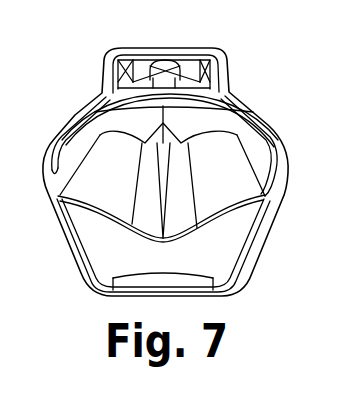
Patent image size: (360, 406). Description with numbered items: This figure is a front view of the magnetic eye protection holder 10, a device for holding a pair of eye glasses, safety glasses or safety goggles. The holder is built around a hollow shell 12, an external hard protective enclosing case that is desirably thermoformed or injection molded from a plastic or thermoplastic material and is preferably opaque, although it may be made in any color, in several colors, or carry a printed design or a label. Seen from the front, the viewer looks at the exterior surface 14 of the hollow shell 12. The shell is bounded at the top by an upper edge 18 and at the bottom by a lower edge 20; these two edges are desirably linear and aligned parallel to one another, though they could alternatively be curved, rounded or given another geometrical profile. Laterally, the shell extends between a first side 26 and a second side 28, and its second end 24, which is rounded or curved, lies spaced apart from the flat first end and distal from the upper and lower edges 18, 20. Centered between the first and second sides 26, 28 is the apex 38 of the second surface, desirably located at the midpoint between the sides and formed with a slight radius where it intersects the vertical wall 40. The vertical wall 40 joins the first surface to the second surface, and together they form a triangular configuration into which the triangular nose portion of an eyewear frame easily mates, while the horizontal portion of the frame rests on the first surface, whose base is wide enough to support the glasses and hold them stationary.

The magnetic eye protection holder 10 is at (258, 34).
The hollow shell 12 is at (229, 81).
The exterior surface 14 is at (270, 140).
The upper edge 18 is at (177, 52).
The lower edge 20 is at (198, 296).
The second end 24 is at (200, 131).
The first side 26 is at (42, 166).
The second side 28 is at (288, 172).
The apex 38 is at (168, 64).
The vertical wall 40 is at (134, 79).